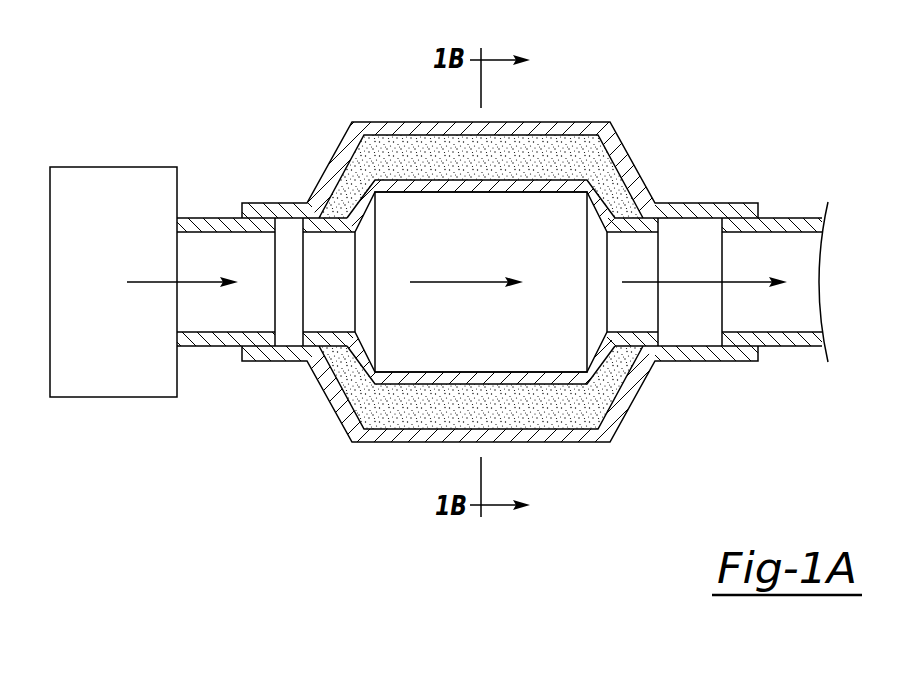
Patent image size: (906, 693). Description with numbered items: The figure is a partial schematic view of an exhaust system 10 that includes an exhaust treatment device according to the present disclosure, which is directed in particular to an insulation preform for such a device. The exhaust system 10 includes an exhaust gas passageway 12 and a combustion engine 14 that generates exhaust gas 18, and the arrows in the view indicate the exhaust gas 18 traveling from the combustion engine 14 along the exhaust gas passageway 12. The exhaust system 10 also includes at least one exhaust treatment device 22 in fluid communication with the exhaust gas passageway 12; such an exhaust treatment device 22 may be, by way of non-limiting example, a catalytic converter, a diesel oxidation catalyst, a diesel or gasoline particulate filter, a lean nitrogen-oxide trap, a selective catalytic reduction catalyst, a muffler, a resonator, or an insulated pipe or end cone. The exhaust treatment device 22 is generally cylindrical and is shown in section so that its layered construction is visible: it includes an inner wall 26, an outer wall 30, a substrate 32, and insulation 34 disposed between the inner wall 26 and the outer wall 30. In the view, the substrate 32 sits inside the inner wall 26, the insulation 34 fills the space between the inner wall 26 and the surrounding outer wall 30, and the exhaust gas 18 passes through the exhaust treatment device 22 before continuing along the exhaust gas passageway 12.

The exhaust system 10 is at (682, 36).
The exhaust gas passageway 12 is at (788, 242).
The combustion engine 14 is at (128, 183).
The exhaust gas 18 is at (200, 280).
The exhaust treatment device 22 is at (553, 112).
The inner wall 26 is at (395, 385).
The outer wall 30 is at (611, 429).
The substrate 32 is at (387, 222).
The insulation 34 is at (597, 163).